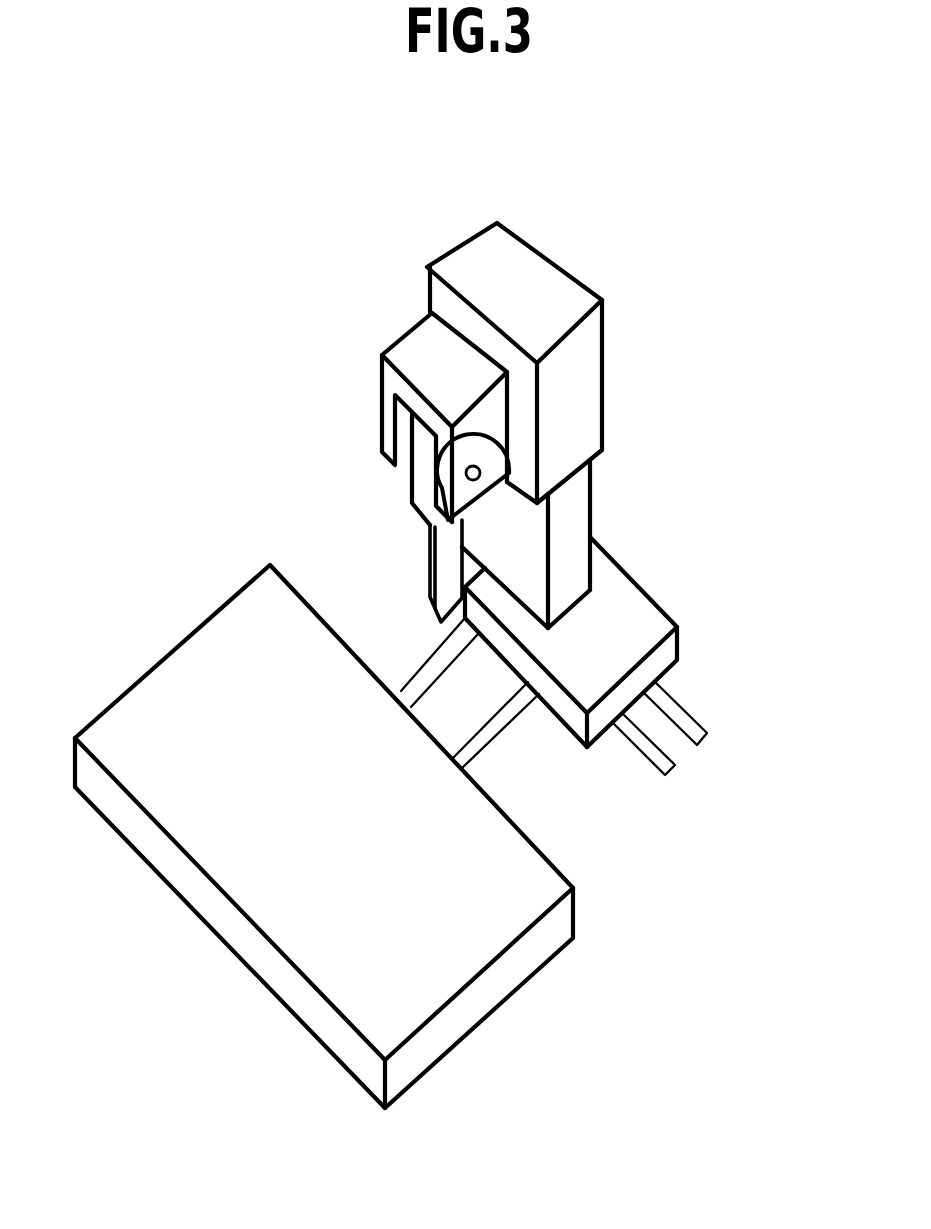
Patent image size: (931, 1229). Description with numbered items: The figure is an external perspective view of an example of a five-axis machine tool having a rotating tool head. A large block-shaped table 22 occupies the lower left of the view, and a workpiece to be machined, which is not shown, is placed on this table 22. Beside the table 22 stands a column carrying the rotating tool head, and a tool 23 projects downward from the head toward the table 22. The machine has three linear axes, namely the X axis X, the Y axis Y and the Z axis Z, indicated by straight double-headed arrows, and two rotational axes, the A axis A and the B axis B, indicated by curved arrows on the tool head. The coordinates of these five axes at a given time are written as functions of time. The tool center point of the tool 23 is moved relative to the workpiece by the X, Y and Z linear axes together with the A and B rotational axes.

The table 22 is at (185, 705).
The tool 23 is at (432, 563).
The X axis X is at (350, 540).
The Y axis Y is at (785, 717).
The Z axis Z is at (640, 317).
The A axis A is at (447, 520).
The B axis B is at (516, 472).